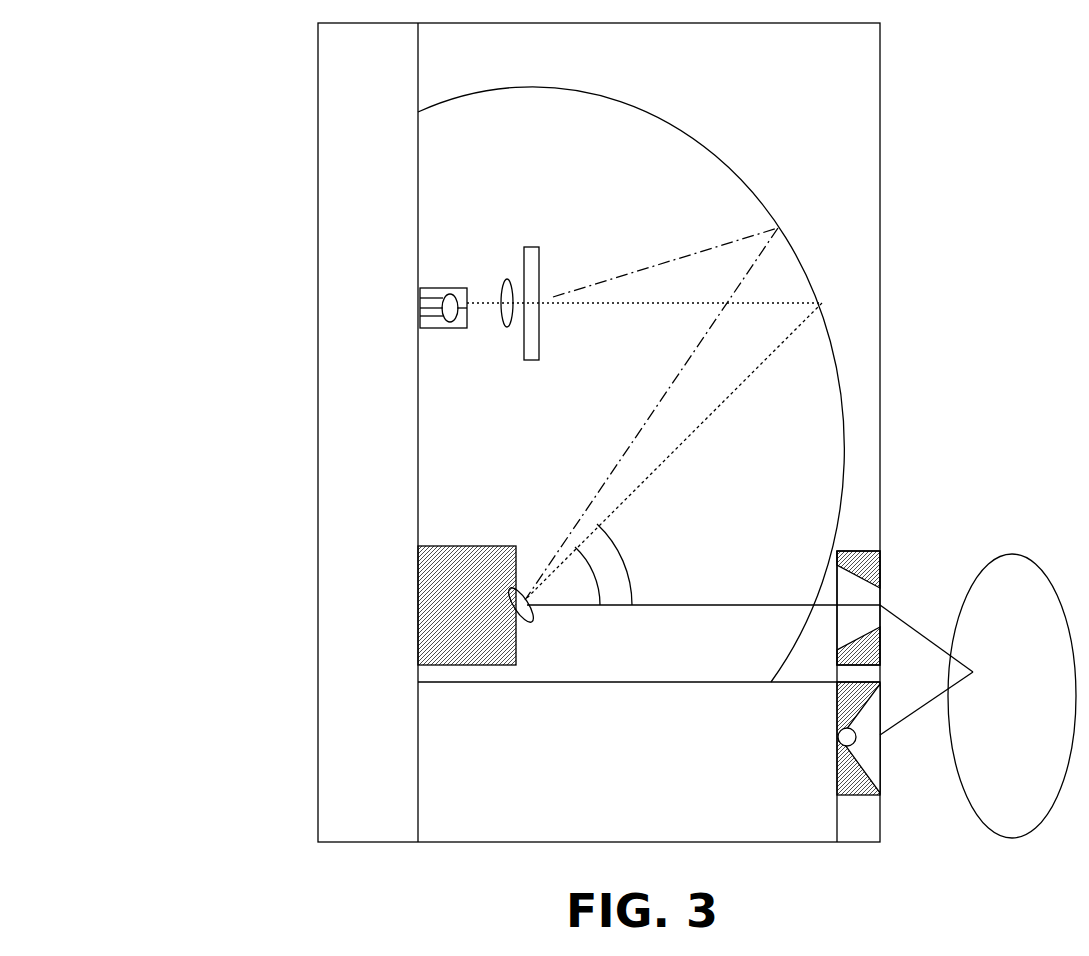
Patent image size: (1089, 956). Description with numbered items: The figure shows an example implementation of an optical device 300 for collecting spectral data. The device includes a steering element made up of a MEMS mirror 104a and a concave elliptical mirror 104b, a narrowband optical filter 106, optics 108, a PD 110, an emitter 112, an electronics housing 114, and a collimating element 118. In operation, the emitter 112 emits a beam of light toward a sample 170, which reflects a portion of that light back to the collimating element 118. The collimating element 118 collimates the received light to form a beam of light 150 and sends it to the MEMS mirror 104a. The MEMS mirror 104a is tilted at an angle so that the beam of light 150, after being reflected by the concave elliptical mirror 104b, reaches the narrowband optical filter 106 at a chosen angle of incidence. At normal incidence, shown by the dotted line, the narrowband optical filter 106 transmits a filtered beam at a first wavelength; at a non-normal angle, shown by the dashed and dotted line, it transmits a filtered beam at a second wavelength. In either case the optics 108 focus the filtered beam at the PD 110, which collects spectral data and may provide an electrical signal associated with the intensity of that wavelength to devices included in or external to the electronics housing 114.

The optical device 300 is at (124, 31).
The MEMS mirror 104a is at (528, 618).
The concave elliptical mirror 104b is at (724, 159).
The narrowband optical filter 106 is at (524, 247).
The optics 108 is at (509, 283).
The PD 110 is at (401, 296).
The emitter 112 is at (840, 775).
The electronics housing 114 is at (462, 797).
The collimating element 118 is at (872, 565).
The beam of light 150 is at (727, 605).
The sample 170 is at (1031, 707).